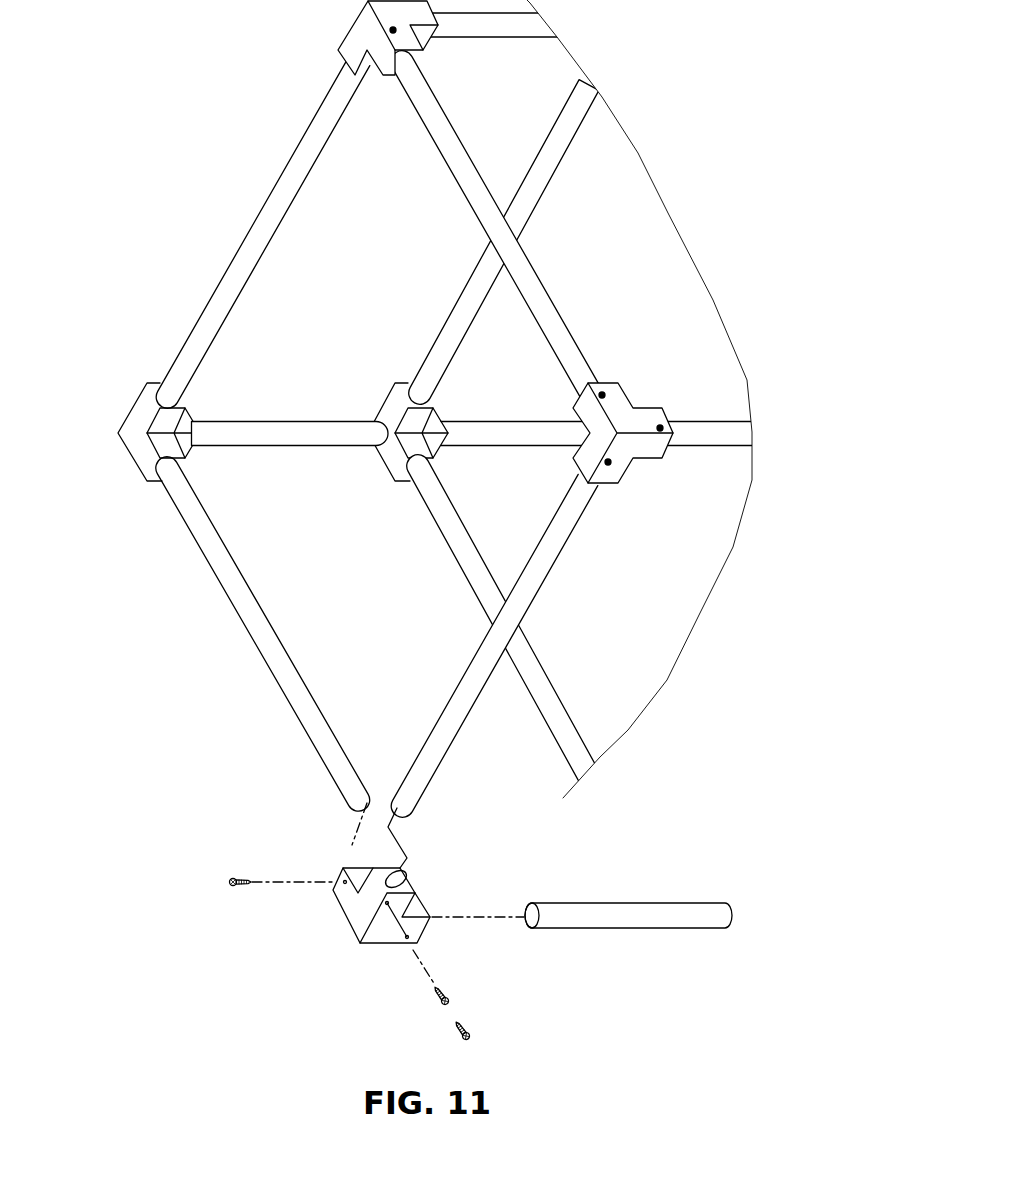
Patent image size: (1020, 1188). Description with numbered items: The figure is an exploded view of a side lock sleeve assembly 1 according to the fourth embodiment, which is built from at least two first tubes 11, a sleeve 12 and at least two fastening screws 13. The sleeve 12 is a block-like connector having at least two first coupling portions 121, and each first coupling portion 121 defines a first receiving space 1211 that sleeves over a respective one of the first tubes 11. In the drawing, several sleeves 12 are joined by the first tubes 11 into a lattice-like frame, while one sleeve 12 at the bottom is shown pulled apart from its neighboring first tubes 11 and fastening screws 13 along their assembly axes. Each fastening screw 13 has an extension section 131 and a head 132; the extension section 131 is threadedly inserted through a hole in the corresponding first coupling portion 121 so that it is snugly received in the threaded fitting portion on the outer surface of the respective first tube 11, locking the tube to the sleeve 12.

The side lock sleeve assembly 1 is at (411, 529).
The first tube 11 is at (218, 556).
The sleeve 12 is at (369, 905).
The fastening screw 13 is at (293, 933).
The first coupling portion 121 is at (407, 900).
The first receiving space 1211 is at (410, 878).
The extension section 131 is at (248, 878).
The screw head 132 is at (234, 877).